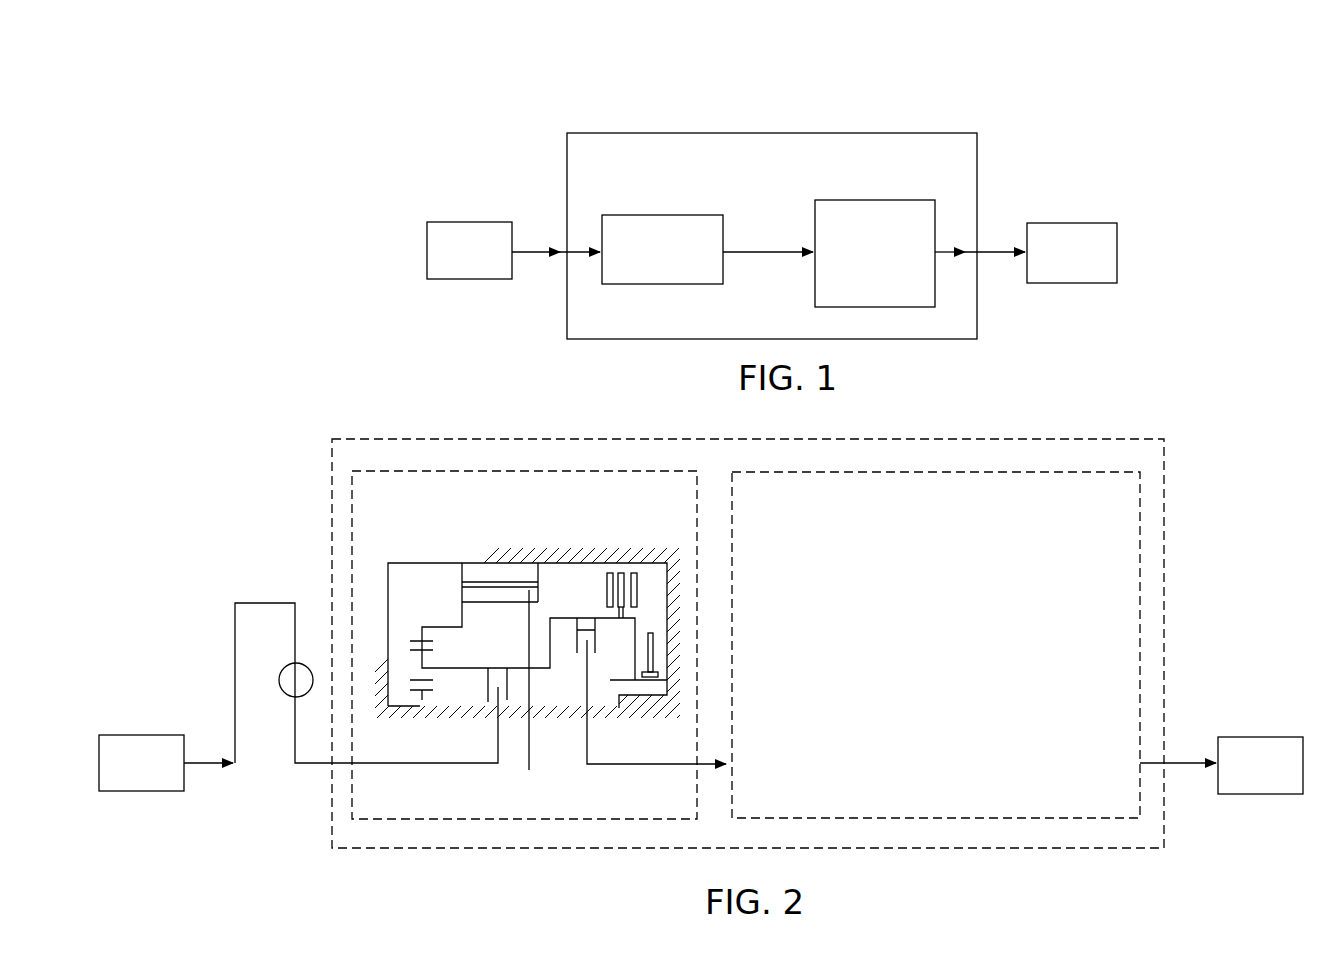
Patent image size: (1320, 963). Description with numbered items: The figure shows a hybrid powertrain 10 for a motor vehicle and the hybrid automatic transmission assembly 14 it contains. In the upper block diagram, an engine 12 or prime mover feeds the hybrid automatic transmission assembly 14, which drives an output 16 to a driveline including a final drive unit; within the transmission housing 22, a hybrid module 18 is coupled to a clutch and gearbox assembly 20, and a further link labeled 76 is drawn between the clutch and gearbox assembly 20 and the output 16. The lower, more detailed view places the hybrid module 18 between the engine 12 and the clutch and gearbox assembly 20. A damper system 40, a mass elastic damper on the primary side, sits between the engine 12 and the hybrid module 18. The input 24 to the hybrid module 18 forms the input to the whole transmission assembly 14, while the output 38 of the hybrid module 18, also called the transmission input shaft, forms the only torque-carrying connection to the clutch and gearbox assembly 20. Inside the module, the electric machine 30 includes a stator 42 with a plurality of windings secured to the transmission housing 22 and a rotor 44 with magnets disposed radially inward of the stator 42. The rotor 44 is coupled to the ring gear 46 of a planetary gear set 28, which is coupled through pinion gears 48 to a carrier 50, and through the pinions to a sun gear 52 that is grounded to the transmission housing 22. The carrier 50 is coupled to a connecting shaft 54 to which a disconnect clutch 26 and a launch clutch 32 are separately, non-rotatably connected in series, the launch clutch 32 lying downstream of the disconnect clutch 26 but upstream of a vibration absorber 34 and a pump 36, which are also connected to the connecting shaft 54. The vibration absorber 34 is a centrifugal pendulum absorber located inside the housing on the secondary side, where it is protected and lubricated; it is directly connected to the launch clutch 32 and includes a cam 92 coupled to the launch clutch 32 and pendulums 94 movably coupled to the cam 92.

In FIG. 1, the hybrid powertrain 10 is at (676, 95).
In FIG. 1, the engine 12 is at (465, 222).
In FIG. 2, the engine 12 is at (150, 735).
In FIG. 1, the hybrid automatic transmission assembly 14 is at (913, 123).
In FIG. 2, the hybrid automatic transmission assembly 14 is at (908, 434).
In FIG. 1, the output 16 is at (1070, 223).
In FIG. 2, the output 16 is at (1285, 737).
In FIG. 1, the hybrid module 18 is at (630, 215).
In FIG. 2, the hybrid module 18 is at (470, 468).
In FIG. 1, the clutch and gearbox assembly 20 is at (913, 196).
In FIG. 2, the clutch and gearbox assembly 20 is at (1098, 466).
In FIG. 1, the transmission housing 22 is at (978, 150).
In FIG. 2, the transmission housing 22 is at (1014, 438).
In FIG. 1, the input 24 is at (575, 243).
In FIG. 2, the input 24 is at (387, 765).
In FIG. 2, the disconnect clutch 26 is at (508, 692).
In FIG. 2, the planetary gear set 28 is at (437, 622).
In FIG. 2, the electric machine 30 is at (481, 557).
In FIG. 2, the launch clutch 32 is at (597, 627).
In FIG. 2, the vibration absorber 34 is at (628, 572).
In FIG. 2, the pump 36 is at (648, 688).
In FIG. 1, the output 38 is at (770, 251).
In FIG. 2, the output 38 is at (608, 764).
In FIG. 2, the damper system 40 is at (296, 698).
In FIG. 2, the stator 42 is at (515, 562).
In FIG. 2, the rotor 44 is at (529, 770).
In FIG. 2, the ring gear 46 is at (413, 638).
In FIG. 2, the pinion gears 48 is at (433, 650).
In FIG. 2, the carrier 50 is at (424, 671).
In FIG. 2, the sun gear 52 is at (422, 700).
In FIG. 2, the connecting shaft 54 is at (542, 668).
In FIG. 1, the transmission output shaft 76 is at (940, 250).
In FIG. 2, the transmission output shaft 76 is at (1152, 762).
In FIG. 2, the cam 92 is at (619, 572).
In FIG. 2, the pendulums 94 is at (608, 572).